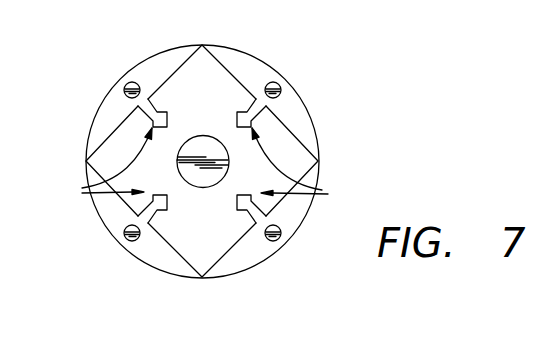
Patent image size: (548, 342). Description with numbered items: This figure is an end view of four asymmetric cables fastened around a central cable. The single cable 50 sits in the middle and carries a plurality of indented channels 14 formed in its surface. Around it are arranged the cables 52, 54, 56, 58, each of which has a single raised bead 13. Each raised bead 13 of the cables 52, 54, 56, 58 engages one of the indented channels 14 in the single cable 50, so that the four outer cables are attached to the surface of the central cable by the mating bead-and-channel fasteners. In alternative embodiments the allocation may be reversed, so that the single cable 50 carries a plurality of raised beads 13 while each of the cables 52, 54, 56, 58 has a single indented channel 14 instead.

The raised bead 13 is at (249, 106).
The indented channel 14 is at (204, 169).
The single cable 50 is at (115, 150).
The cable 52 is at (286, 75).
The cable 54 is at (269, 262).
The cable 56 is at (114, 236).
The cable 58 is at (124, 75).